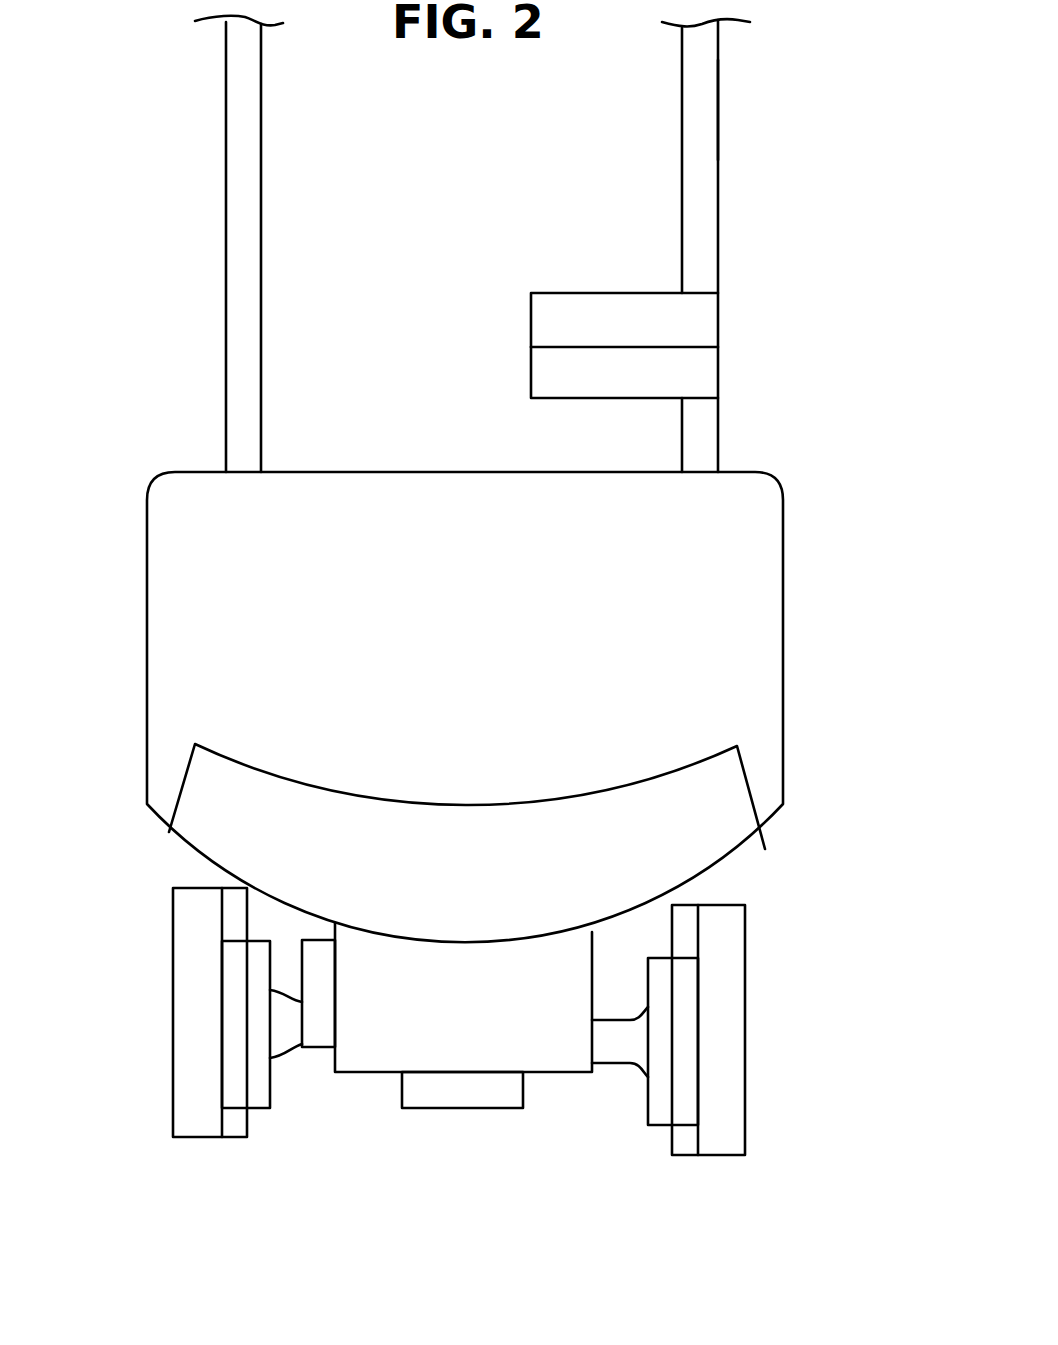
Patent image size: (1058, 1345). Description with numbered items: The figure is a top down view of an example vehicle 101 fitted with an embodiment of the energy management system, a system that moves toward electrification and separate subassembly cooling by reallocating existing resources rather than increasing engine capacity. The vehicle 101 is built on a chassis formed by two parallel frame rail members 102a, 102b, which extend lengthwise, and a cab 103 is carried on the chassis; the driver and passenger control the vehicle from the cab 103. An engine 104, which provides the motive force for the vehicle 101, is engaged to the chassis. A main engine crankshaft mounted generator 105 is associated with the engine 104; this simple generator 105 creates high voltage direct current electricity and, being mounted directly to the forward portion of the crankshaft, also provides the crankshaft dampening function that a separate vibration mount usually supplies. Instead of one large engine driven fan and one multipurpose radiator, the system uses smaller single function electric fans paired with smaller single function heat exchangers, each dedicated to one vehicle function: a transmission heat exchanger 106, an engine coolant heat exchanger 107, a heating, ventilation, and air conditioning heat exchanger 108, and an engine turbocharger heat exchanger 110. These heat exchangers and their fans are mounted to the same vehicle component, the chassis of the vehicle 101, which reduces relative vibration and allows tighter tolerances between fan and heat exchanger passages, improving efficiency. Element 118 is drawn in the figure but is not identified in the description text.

The vehicle 101 is at (721, 154).
The frame rail member 102a is at (721, 90).
The frame rail member 102b is at (221, 296).
The cab 103 is at (786, 670).
The engine 104 is at (388, 1049).
The generator 105 is at (520, 1114).
The transmission heat exchanger 106 is at (692, 375).
The engine coolant heat exchanger 107 is at (661, 1129).
The HVAC heat exchanger 108 is at (694, 322).
The engine turbocharger heat exchanger 110 is at (266, 1114).
The bearing block 118 is at (317, 1052).